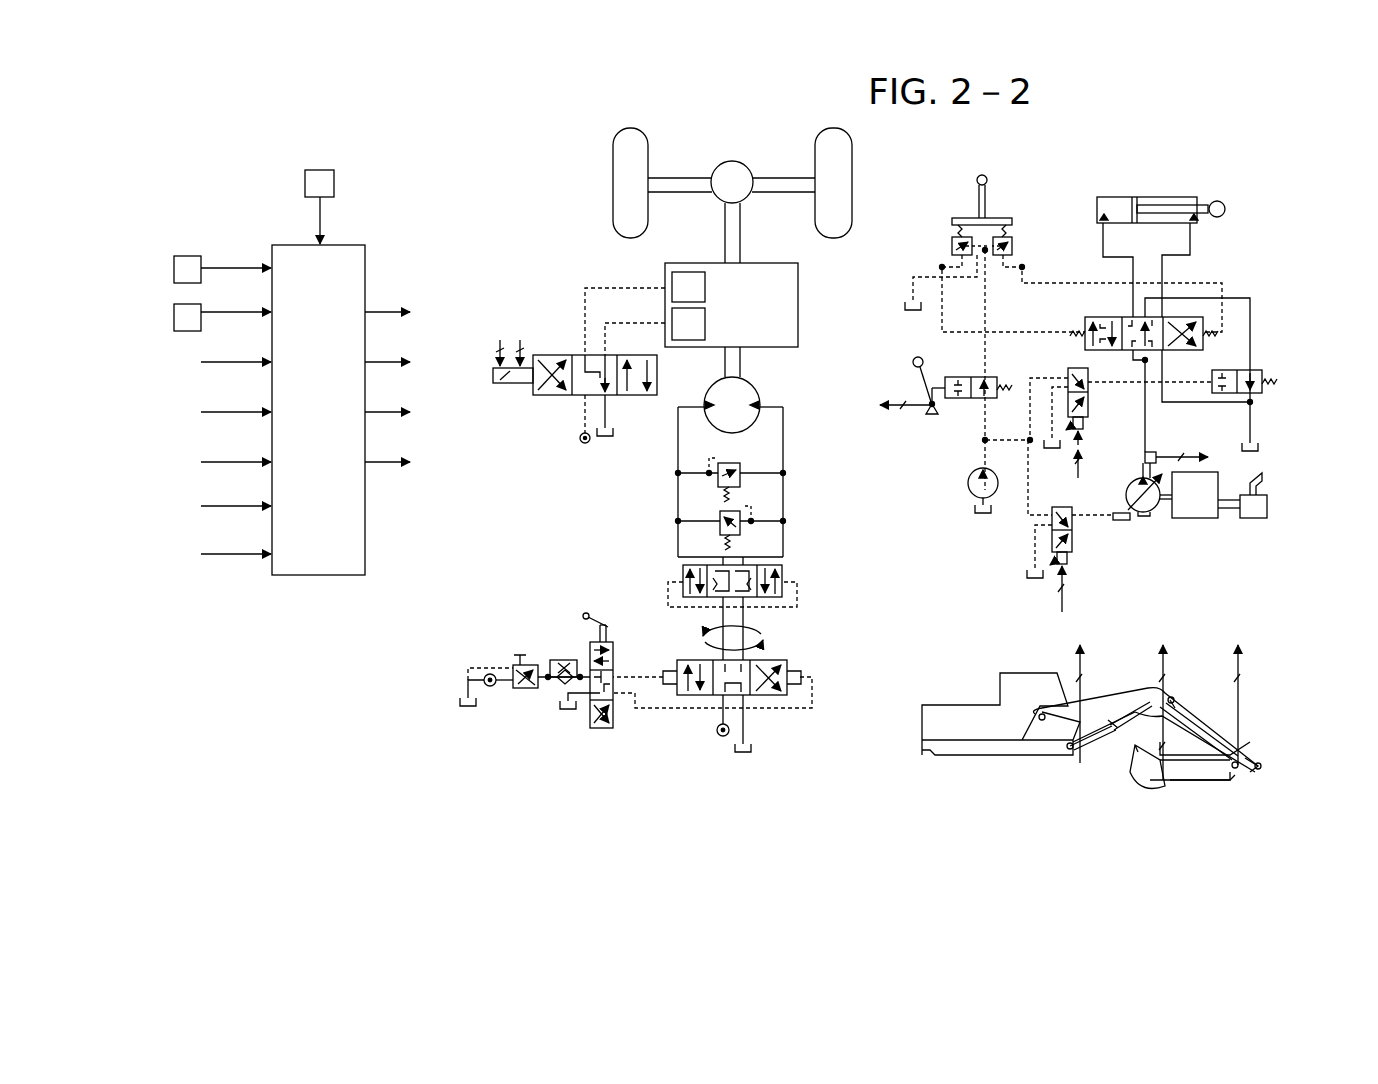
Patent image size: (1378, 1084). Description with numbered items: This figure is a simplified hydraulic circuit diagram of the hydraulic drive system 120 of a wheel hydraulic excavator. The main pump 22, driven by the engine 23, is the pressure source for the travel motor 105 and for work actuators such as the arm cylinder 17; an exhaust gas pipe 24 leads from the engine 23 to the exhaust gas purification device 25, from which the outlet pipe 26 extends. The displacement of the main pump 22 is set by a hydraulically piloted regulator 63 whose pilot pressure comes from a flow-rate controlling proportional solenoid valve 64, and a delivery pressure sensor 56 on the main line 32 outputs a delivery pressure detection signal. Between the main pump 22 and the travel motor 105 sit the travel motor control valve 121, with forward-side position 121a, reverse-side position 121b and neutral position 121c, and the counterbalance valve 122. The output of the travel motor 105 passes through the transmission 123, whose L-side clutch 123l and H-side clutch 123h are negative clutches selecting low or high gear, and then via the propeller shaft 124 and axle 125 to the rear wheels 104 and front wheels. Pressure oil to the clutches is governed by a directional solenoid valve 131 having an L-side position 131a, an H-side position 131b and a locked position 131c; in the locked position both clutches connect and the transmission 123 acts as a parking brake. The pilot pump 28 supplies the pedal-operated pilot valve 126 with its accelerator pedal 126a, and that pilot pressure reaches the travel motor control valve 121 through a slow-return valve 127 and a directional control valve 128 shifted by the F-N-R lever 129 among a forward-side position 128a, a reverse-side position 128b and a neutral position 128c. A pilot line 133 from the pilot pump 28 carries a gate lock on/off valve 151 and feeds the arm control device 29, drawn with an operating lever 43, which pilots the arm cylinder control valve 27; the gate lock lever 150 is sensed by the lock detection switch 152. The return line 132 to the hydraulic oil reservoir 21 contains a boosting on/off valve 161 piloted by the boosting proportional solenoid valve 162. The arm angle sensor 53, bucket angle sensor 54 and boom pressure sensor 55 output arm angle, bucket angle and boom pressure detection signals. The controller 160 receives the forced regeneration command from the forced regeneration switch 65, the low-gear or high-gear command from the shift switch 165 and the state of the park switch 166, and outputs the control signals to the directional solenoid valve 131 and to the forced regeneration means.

The hydraulic drive system 120 is at (336, 136).
The forced regeneration switch 65 is at (305, 172).
The controller 160 is at (272, 245).
The park switch 166 is at (176, 256).
The shift switch 165 is at (174, 331).
The rear wheels 104 is at (613, 140).
The axle 125 is at (720, 166).
The propeller shaft 124 is at (742, 236).
The transmission 123 is at (717, 291).
The L-side clutch 123l is at (672, 278).
The H-side clutch 123h is at (670, 316).
The travel motor 105 is at (756, 390).
The directional solenoid valve 131 is at (573, 380).
The L-side position 131a is at (633, 397).
The H-side position 131b is at (550, 397).
The locked position 131c is at (580, 398).
The counterbalance valve 122 is at (683, 570).
The travel motor control valve 121 is at (731, 703).
The forward-side position 121a is at (695, 697).
The reverse-side position 121b is at (775, 697).
The neutral position 121c is at (748, 697).
The main pump 22 is at (722, 738).
The directional control valve 128 is at (610, 695).
The forward-side position 128a is at (612, 650).
The reverse-side position 128b is at (634, 727).
The neutral position 128c is at (613, 680).
The F-N-R lever 129 is at (600, 624).
The slow-return valve 127 is at (568, 660).
The pilot valve 126 is at (524, 659).
The accelerator pedal 126a is at (524, 653).
The pilot pump 28 is at (490, 688).
The operating lever 43 is at (977, 179).
The arm control device 29 is at (952, 218).
The arm cylinder 17 is at (1148, 197).
The arm cylinder control valve 27 is at (1088, 322).
The return line 132 is at (1250, 312).
The boosting on/off valve 161 is at (1262, 372).
The gate lock lever 150 is at (915, 360).
The gate lock on/off valve 151 is at (966, 377).
The lock detection switch 152 is at (928, 404).
The pilot line 133 is at (986, 362).
The boosting proportional solenoid valve 162 is at (1072, 368).
The main line 32 is at (1143, 424).
The delivery pressure sensor 56 is at (1152, 450).
The flow-rate controlling proportional solenoid valve 64 is at (1060, 507).
The regulator 63 is at (1121, 521).
The hydraulic oil reservoir 21 is at (1154, 520).
The engine 23 is at (1207, 518).
The exhaust gas pipe 24 is at (1232, 510).
The exhaust gas purification device 25 is at (1267, 516).
The outlet pipe 26 is at (1262, 478).
The boom pressure sensor 55 is at (1078, 752).
The bucket angle sensor 54 is at (1162, 780).
The arm angle sensor 53 is at (1252, 772).